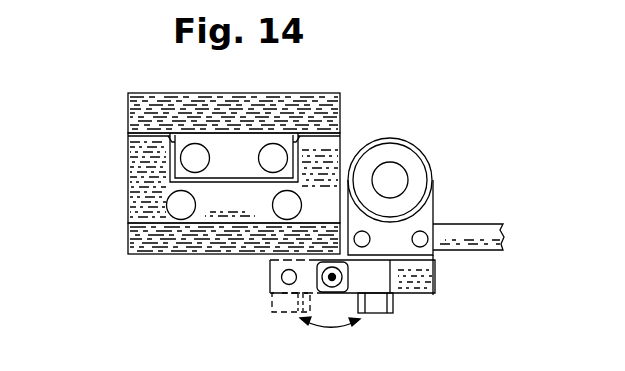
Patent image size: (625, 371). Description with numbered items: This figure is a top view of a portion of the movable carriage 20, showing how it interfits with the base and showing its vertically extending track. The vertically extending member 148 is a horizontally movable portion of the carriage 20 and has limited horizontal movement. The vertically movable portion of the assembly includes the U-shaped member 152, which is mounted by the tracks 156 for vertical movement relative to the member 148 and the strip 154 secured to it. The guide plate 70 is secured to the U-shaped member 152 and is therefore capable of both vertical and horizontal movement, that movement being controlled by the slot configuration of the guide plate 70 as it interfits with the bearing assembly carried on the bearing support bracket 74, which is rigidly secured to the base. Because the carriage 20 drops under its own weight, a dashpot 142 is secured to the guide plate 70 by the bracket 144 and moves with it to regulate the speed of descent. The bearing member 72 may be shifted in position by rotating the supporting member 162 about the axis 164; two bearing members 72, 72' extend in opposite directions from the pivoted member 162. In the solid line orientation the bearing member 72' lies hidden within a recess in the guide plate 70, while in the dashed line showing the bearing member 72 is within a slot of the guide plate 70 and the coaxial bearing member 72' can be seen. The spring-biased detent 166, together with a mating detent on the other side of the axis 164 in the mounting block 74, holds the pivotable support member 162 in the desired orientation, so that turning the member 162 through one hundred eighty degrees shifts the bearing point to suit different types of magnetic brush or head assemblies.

The movable carriage 20 is at (104, 207).
The guide plate 70 is at (138, 230).
The bearing member 72 is at (390, 323).
The bearing member 72' is at (278, 322).
The bearing support bracket 74 is at (276, 271).
The dashpot 142 is at (415, 162).
The bracket 144 is at (425, 218).
The vertically extending member 148 is at (330, 100).
The U-shaped member 152 is at (128, 147).
The strip 154 is at (220, 142).
The tracks 156 is at (170, 140).
The supporting member 162 is at (387, 282).
The axis 164 is at (333, 280).
The spring-biased detent 166 is at (283, 282).